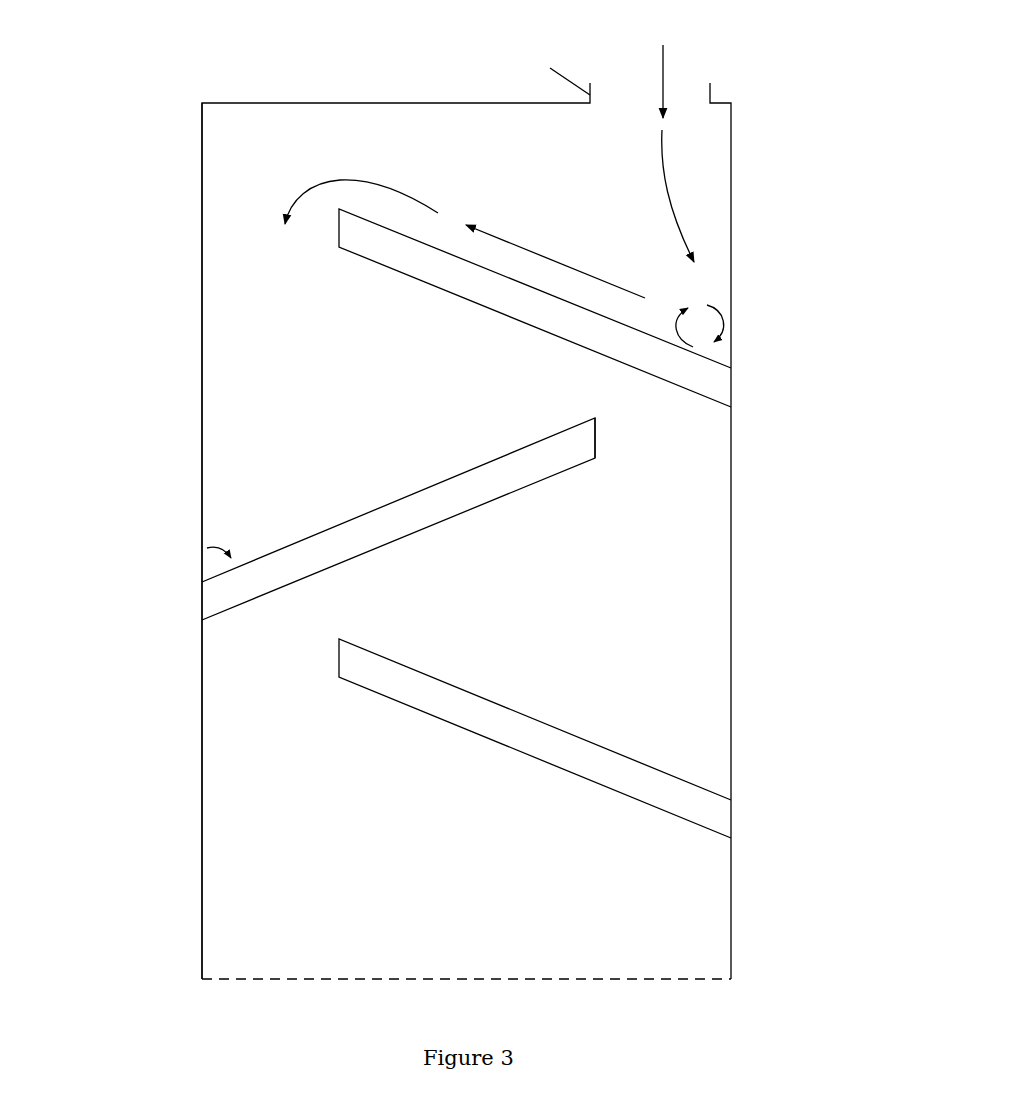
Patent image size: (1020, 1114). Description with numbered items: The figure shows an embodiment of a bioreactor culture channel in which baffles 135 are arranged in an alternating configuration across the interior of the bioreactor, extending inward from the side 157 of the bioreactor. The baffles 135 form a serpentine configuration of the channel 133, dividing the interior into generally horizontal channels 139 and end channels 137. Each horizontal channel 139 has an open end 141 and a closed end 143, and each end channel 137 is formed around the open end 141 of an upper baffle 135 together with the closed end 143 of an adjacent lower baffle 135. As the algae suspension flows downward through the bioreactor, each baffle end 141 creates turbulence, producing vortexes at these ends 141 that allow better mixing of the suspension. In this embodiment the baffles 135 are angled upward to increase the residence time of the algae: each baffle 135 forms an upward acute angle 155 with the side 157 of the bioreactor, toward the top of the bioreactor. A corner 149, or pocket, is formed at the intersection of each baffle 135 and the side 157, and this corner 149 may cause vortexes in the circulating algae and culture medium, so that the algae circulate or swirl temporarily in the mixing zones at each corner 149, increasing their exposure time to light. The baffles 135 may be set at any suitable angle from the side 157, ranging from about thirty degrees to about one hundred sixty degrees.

The channel 133 is at (618, 413).
The baffle 135 is at (372, 262).
The end channel 137 is at (662, 452).
The horizontal channel 139 is at (490, 383).
The open end 141 is at (597, 445).
The closed end 143 is at (687, 803).
The corner 149 is at (712, 328).
The upward acute angle 155 is at (229, 540).
The side 157 is at (200, 522).